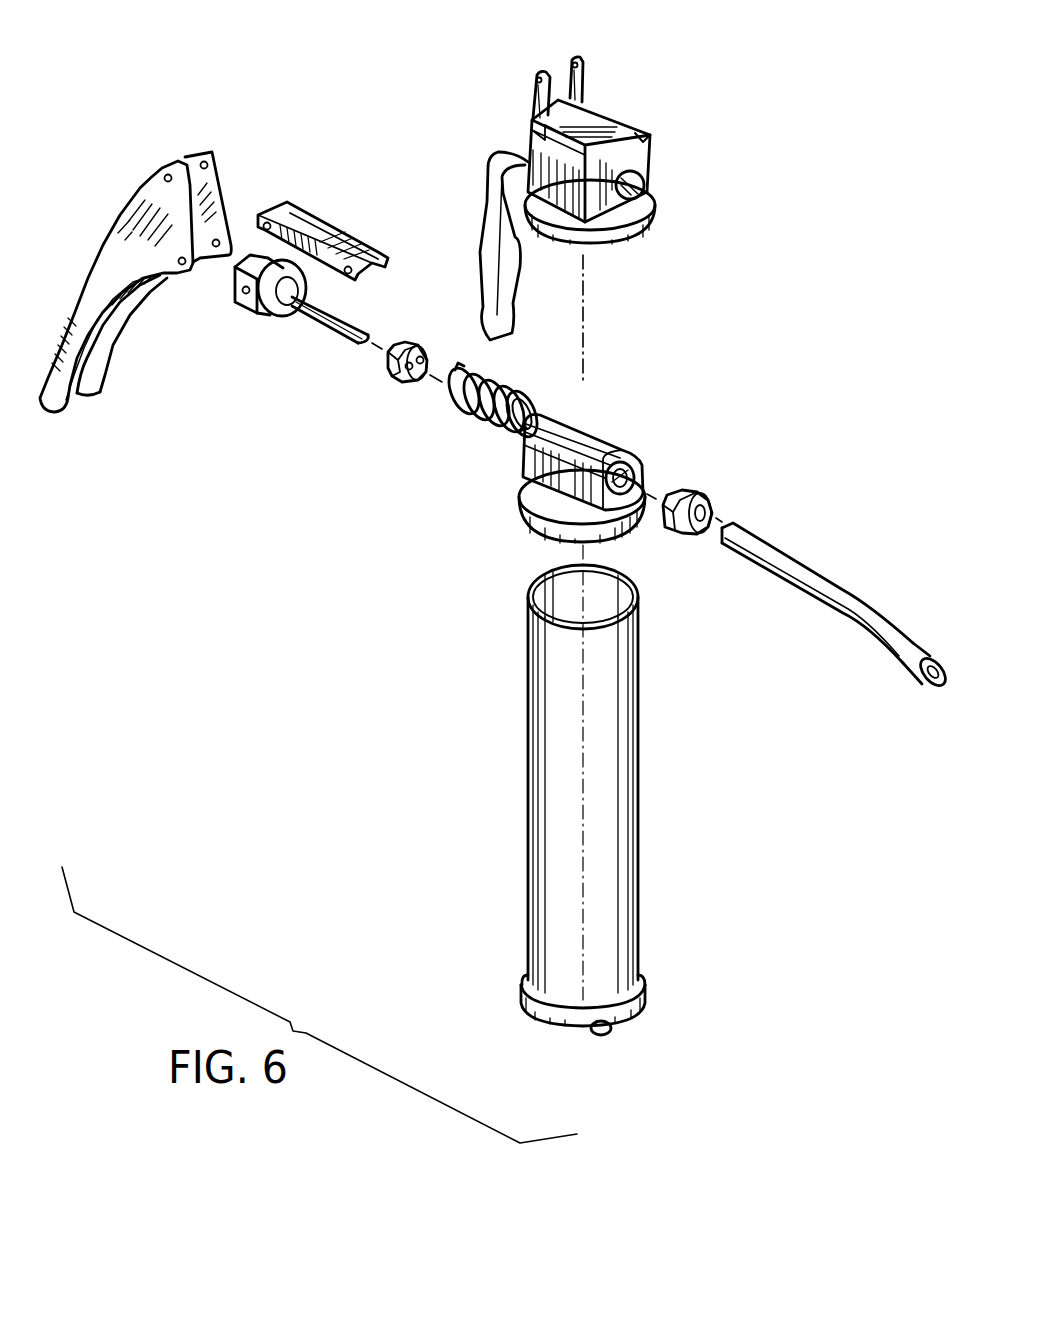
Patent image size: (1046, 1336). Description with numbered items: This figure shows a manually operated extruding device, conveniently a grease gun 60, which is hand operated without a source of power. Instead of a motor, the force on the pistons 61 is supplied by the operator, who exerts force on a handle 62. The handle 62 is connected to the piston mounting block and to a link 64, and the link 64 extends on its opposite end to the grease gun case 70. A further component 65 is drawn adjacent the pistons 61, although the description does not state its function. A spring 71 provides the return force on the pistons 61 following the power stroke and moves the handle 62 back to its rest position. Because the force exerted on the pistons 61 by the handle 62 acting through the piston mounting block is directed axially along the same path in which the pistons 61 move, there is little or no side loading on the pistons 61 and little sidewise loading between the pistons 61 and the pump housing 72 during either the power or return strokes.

The grease gun 60 is at (355, 601).
The pistons 61 is at (321, 324).
The handle 62 is at (100, 358).
The link 64 is at (322, 228).
The coupling block 65 is at (234, 296).
The grease gun case 70 is at (654, 171).
The spring 71 is at (463, 421).
The pump housing 72 is at (600, 433).